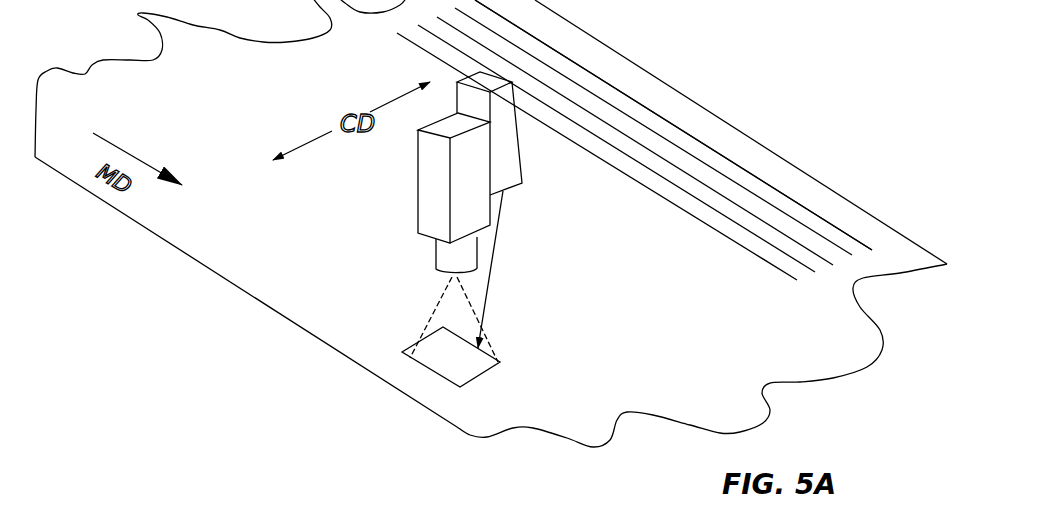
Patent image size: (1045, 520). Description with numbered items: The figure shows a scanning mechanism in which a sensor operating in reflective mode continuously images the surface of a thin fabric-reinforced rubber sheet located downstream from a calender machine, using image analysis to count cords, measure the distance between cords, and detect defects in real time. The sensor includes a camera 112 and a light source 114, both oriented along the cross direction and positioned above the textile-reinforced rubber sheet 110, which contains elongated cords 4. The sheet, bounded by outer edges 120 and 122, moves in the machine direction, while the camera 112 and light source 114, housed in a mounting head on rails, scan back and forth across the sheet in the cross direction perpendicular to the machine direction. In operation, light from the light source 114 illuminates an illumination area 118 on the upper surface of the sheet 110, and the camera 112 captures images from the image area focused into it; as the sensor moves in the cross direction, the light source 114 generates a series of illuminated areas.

The elongated cords 4 is at (842, 232).
The textile-reinforced rubber sheet 110 is at (693, 372).
The camera 112 is at (417, 227).
The light source 114 is at (522, 152).
The illumination area 118 is at (424, 365).
The outer edge 120 is at (640, 68).
The outer edge 122 is at (187, 253).